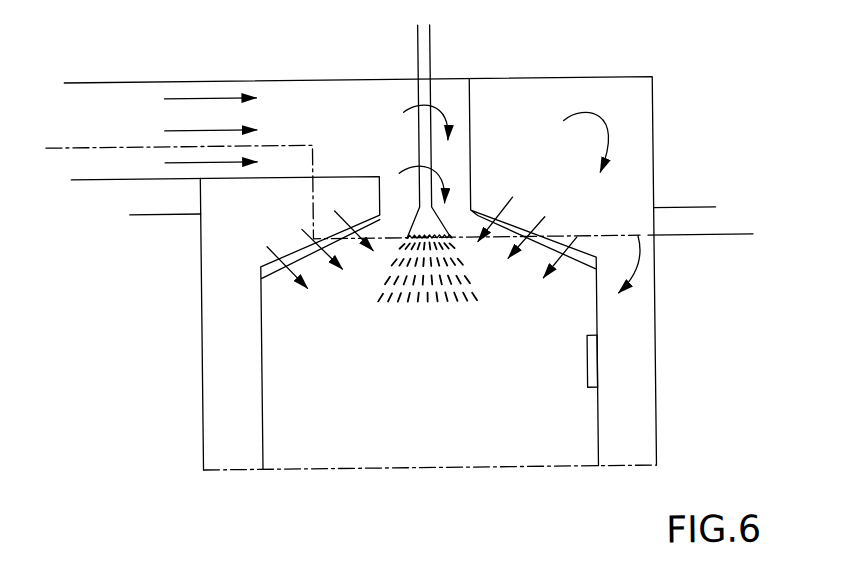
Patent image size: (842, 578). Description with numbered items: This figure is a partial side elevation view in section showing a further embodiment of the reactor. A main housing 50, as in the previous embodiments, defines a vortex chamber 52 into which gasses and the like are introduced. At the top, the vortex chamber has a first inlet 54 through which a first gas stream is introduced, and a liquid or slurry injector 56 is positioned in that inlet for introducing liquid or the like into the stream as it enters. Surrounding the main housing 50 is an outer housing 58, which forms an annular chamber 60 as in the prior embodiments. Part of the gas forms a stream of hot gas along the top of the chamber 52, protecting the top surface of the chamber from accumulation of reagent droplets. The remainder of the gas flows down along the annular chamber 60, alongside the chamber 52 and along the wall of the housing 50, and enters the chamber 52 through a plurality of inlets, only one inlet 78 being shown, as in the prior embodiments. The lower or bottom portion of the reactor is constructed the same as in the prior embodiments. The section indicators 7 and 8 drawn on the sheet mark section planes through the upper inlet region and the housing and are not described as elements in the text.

The main housing 50 is at (598, 440).
The vortex chamber 52 is at (449, 417).
The first inlet 54 is at (462, 155).
The liquid or slurry injector 56 is at (413, 232).
The outer housing 58 is at (654, 146).
The annular chamber 60 is at (635, 332).
The inlet 78 is at (593, 367).
The section line 7- 7 is at (54, 106).
The section line 8- 8 is at (136, 180).